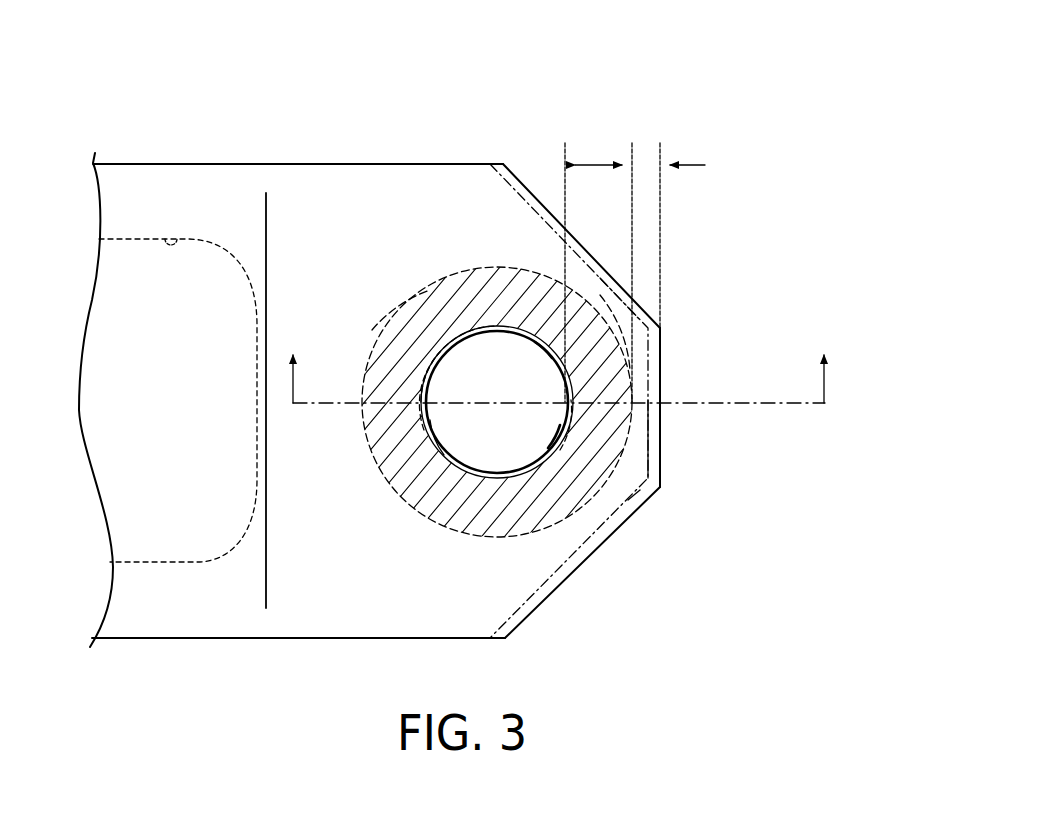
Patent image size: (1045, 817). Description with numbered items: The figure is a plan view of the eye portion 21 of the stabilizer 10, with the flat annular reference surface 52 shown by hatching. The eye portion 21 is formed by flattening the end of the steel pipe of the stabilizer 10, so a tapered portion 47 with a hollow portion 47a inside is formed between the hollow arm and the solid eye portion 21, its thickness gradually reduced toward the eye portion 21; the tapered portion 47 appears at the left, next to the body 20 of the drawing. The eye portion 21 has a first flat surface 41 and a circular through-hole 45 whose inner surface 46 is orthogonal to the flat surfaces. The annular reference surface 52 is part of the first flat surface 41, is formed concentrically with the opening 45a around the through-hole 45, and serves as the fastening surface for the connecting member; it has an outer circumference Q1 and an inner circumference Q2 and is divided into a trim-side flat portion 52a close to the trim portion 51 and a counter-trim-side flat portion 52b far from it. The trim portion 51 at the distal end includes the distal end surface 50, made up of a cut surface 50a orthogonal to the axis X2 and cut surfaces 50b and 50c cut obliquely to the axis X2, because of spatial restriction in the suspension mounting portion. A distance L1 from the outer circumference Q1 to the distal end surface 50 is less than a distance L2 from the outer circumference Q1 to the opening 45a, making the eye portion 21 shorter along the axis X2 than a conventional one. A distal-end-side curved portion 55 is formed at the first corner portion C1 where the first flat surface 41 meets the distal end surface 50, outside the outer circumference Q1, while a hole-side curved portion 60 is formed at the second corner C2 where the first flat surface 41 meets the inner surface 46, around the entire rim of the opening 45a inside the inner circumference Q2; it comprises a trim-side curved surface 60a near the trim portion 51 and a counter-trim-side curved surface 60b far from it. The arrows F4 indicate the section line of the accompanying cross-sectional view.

The stabilizer 10 is at (325, 100).
The housing body 20 is at (131, 160).
The eye portion 21 is at (413, 185).
The first flat surface 41 is at (347, 218).
The through-hole 45 is at (501, 356).
The opening 45a is at (388, 470).
The inner surface 46 is at (442, 345).
The tapered portion 47 is at (242, 190).
The hollow portion 47a is at (170, 235).
The distal end surface 50 is at (662, 470).
The cut surface 50a is at (665, 380).
The cut surface 50b is at (542, 188).
The cut surface 50c is at (548, 605).
The trim portion 51 is at (664, 357).
The annular reference surface 52 is at (450, 515).
The trim-side flat portion 52a is at (607, 340).
The counter-trim-side flat portion 52b is at (403, 338).
The distal-end-side curved portion 55 is at (655, 423).
The hole-side curved portion 60 is at (509, 490).
The trim-side curved surface 60a is at (578, 450).
The counter-trim-side curved surface 60b is at (423, 416).
The distance L1 is at (643, 160).
The distance L2 is at (594, 160).
The first corner portion C1 is at (650, 297).
The second corner C2 is at (556, 428).
The outer circumference Q1 is at (630, 497).
The inner circumference Q2 is at (545, 352).
The axis X2 is at (760, 405).
The section arrow F4 is at (561, 362).